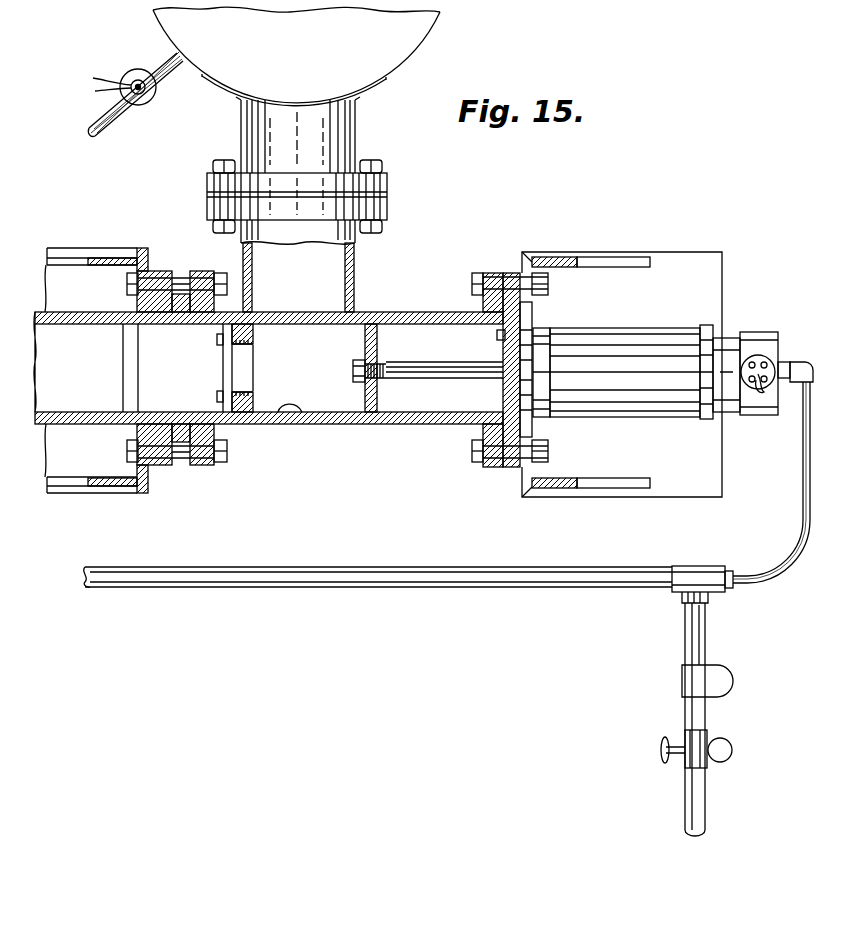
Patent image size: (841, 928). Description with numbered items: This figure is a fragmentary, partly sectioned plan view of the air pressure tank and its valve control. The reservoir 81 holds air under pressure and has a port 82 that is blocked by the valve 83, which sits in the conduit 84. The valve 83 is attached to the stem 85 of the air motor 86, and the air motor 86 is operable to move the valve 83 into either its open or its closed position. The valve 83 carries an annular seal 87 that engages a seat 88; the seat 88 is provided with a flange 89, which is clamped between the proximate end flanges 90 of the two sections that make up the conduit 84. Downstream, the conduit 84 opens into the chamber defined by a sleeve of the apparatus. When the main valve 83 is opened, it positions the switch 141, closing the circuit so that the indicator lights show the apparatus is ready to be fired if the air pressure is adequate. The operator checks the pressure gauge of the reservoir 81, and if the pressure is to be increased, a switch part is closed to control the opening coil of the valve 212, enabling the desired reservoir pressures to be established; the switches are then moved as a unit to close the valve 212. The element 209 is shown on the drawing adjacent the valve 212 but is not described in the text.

The reservoir 81 is at (403, 42).
The port 82 is at (335, 288).
The valve 83 is at (292, 426).
The conduit 84 is at (378, 426).
The stem 85 is at (460, 385).
The air motor 86 is at (642, 332).
The annular seal 87 is at (230, 362).
The seat 88 is at (190, 412).
The flange 89 is at (178, 458).
The end flanges 90 is at (202, 472).
The switch 141 is at (497, 334).
The probe rod 209 is at (117, 123).
The valve 212 is at (132, 71).